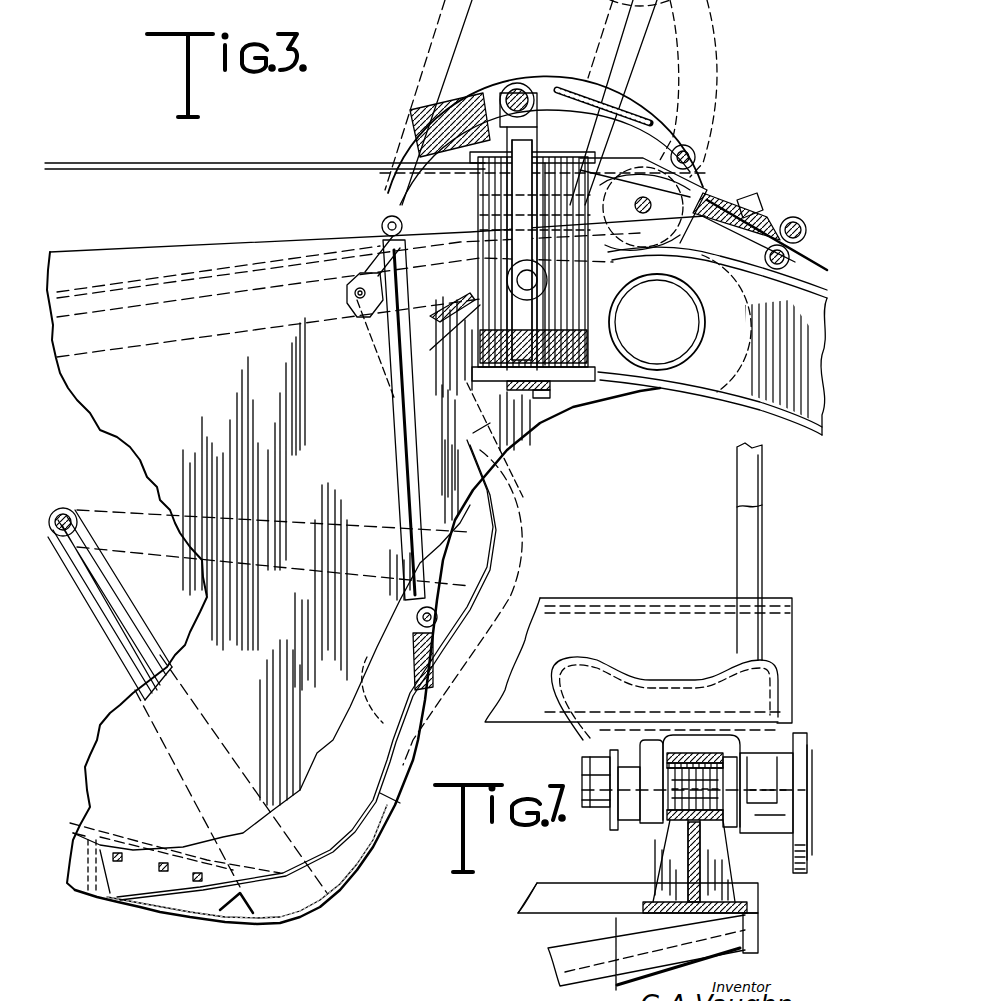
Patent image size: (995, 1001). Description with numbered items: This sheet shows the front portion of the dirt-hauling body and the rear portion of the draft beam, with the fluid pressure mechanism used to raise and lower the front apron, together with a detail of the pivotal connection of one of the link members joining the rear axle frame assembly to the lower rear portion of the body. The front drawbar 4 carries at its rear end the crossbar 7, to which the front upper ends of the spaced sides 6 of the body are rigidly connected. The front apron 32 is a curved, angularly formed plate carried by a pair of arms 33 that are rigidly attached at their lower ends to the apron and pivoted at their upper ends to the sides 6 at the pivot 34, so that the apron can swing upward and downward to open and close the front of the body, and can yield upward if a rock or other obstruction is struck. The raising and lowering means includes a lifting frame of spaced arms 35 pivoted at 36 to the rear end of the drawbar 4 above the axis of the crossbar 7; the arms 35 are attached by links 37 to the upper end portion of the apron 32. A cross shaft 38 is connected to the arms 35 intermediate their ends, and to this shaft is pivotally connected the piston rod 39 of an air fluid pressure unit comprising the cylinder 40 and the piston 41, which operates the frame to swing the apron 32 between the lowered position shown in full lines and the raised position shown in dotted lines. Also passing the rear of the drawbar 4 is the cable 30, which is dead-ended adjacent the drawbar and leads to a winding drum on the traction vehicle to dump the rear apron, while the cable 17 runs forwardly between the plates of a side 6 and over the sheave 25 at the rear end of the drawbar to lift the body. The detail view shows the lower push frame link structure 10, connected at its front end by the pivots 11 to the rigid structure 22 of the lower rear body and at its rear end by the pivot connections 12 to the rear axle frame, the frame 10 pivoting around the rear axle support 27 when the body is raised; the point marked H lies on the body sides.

In FIG. 3, the cable 30 is at (190, 172).
In FIG. 3, the cable 17 is at (155, 267).
In FIG. 3, the sides 6 is at (205, 622).
In FIG. 3, the lower edge H is at (130, 725).
In FIG. 3, the pivot 34 is at (70, 513).
In FIG. 3, the arms 33 is at (135, 638).
In FIG. 3, the links 37 is at (393, 405).
In FIG. 3, the front apron 32 is at (490, 525).
In FIG. 3, the piston rod 39 is at (500, 208).
In FIG. 3, the piston 41 is at (542, 398).
In FIG. 3, the cylinder 40 is at (597, 352).
In FIG. 3, the arms 35 is at (538, 85).
In FIG. 3, the cross shaft 38 is at (520, 85).
In FIG. 3, the pivot 36 is at (695, 152).
In FIG. 3, the sheave 25 is at (763, 217).
In FIG. 3, the crossbar 7 is at (700, 338).
In FIG. 3, the drawbar 4 is at (762, 378).
In FIG. 7, the rigid structure 22 is at (682, 615).
In FIG. 7, the pivot connections 12 is at (710, 753).
In FIG. 7, the rear axle support 27 is at (812, 720).
In FIG. 7, the pivots 11 is at (607, 793).
In FIG. 7, the push frame link structure 10 is at (690, 853).